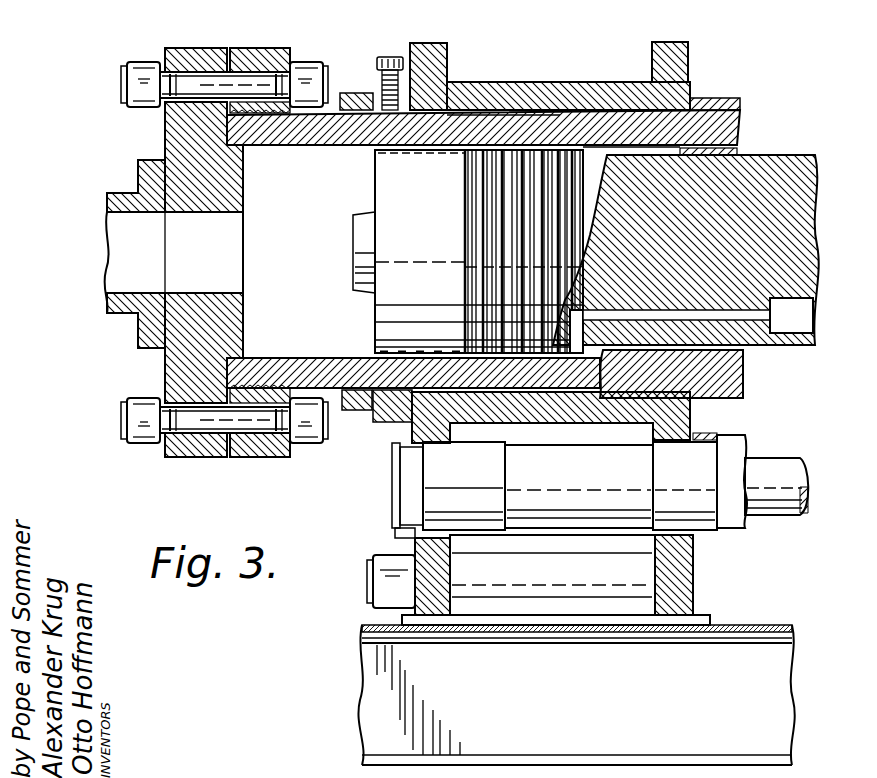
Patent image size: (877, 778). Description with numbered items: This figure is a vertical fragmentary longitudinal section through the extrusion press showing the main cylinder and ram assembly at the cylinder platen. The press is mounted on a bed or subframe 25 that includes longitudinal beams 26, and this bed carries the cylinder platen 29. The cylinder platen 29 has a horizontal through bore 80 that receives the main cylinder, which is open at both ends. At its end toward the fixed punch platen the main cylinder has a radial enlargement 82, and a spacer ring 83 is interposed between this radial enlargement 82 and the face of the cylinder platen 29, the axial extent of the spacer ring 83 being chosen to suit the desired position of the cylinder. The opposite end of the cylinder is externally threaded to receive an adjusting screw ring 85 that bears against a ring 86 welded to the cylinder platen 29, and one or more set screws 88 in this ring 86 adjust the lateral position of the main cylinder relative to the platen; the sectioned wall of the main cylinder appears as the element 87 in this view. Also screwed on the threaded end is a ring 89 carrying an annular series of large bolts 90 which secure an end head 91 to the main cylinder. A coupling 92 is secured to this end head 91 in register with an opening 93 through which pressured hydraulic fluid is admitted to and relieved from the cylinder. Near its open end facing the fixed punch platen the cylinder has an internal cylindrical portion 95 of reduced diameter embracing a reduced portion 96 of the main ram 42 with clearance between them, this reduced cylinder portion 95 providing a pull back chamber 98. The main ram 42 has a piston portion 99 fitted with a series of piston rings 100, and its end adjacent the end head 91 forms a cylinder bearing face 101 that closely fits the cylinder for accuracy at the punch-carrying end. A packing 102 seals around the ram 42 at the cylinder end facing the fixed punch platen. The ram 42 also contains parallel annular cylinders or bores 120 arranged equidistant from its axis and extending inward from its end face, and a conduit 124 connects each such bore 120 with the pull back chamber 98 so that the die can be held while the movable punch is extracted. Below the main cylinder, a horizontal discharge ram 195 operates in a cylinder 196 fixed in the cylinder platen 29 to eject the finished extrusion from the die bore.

The bed or subframe 25 is at (797, 685).
The longitudinal beams 26 is at (793, 726).
The cylinder platen 29 is at (594, 82).
The main ram 42 is at (810, 226).
The horizontal through bore 80 is at (488, 108).
The radial enlargement 82 is at (738, 108).
The spacer ring 83 is at (690, 98).
The adjusting screw ring 85 is at (347, 410).
The ring 86 is at (412, 95).
The sleeve 87 is at (280, 360).
The set screws 88 is at (384, 60).
The ring 89 is at (250, 451).
The large bolts 90 is at (127, 88).
The end head 91 is at (175, 368).
The coupling 92 is at (118, 193).
The opening 93 is at (210, 216).
The internal cylindrical portion of reduced diameter 95 is at (740, 352).
The reduced portion of the main ram 96 is at (797, 153).
The pull back chamber 98 is at (597, 400).
The piston portion 99 is at (402, 195).
The piston rings 100 is at (510, 188).
The cylinder bearing face 101 is at (397, 295).
The packing 102 is at (743, 148).
The parallel annular cylinders or bores 120 is at (813, 300).
The conduit 124 is at (743, 288).
The discharge ram 195 is at (780, 466).
The cylinder 196 is at (605, 462).